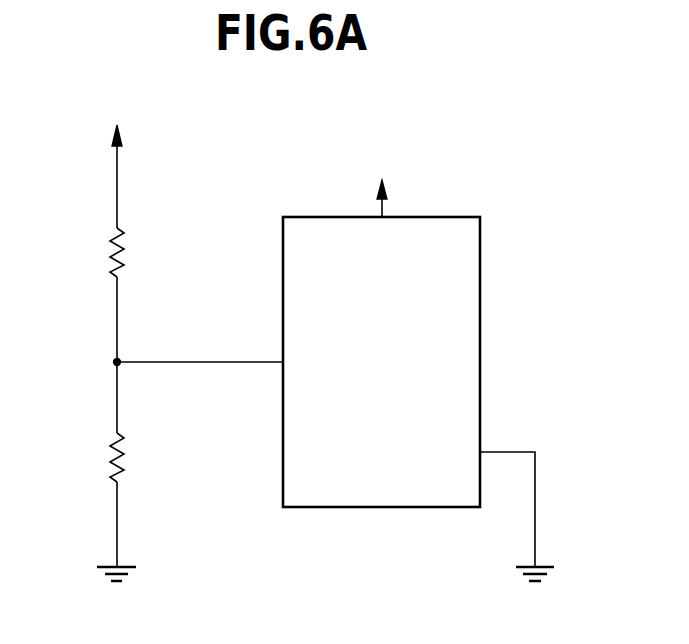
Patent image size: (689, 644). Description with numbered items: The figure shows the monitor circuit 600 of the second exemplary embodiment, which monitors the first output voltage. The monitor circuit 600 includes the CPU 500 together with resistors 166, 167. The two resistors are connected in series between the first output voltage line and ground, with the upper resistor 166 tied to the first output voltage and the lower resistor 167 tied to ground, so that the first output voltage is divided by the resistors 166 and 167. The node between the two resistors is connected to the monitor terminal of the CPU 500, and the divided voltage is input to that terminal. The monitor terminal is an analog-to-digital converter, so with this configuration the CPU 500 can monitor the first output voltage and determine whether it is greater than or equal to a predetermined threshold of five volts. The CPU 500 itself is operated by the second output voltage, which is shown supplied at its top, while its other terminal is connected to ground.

The monitor circuit 600 is at (480, 132).
The resistor 166 is at (107, 258).
The resistor 167 is at (107, 463).
The CPU 500 is at (388, 508).